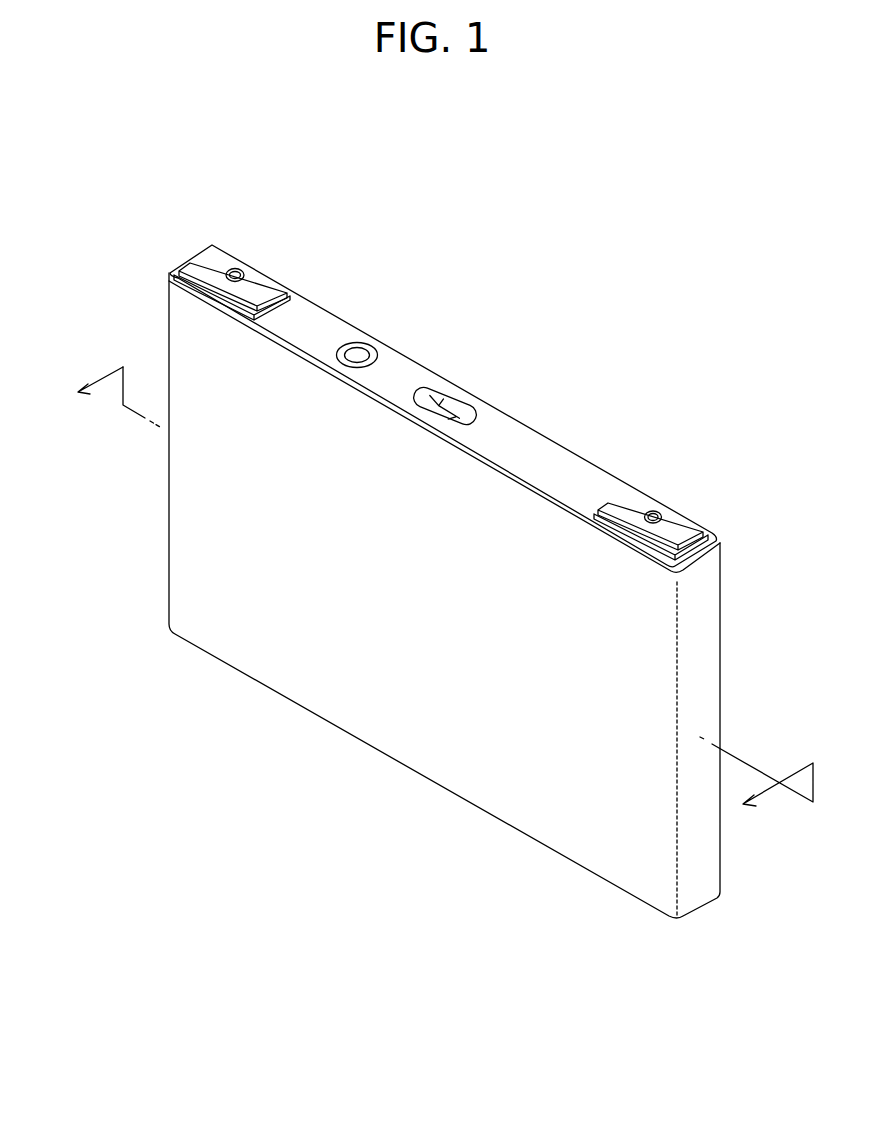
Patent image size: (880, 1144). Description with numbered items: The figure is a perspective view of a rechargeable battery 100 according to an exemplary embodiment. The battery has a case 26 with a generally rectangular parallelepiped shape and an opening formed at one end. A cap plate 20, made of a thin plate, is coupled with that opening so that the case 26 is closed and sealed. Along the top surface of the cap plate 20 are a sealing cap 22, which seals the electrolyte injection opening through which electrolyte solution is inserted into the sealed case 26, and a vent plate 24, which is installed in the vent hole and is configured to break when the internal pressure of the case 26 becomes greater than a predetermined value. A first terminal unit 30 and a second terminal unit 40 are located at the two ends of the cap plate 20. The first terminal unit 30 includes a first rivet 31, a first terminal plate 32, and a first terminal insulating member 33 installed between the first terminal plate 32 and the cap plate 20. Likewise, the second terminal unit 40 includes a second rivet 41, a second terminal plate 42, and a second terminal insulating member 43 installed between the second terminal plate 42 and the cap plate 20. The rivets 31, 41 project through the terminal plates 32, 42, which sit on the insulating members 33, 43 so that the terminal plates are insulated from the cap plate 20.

The rechargeable battery 100 is at (495, 189).
The cap plate 20 is at (533, 443).
The sealing cap 22 is at (360, 353).
The vent plate 24 is at (452, 402).
The case 26 is at (403, 733).
The first terminal unit 30 is at (254, 252).
The first rivet 31 is at (246, 243).
The first terminal plate 32 is at (260, 284).
The first terminal insulating member 33 is at (288, 292).
The second terminal unit 40 is at (674, 494).
The second rivet 41 is at (664, 484).
The second terminal plate 42 is at (677, 522).
The second terminal insulating member 43 is at (707, 536).